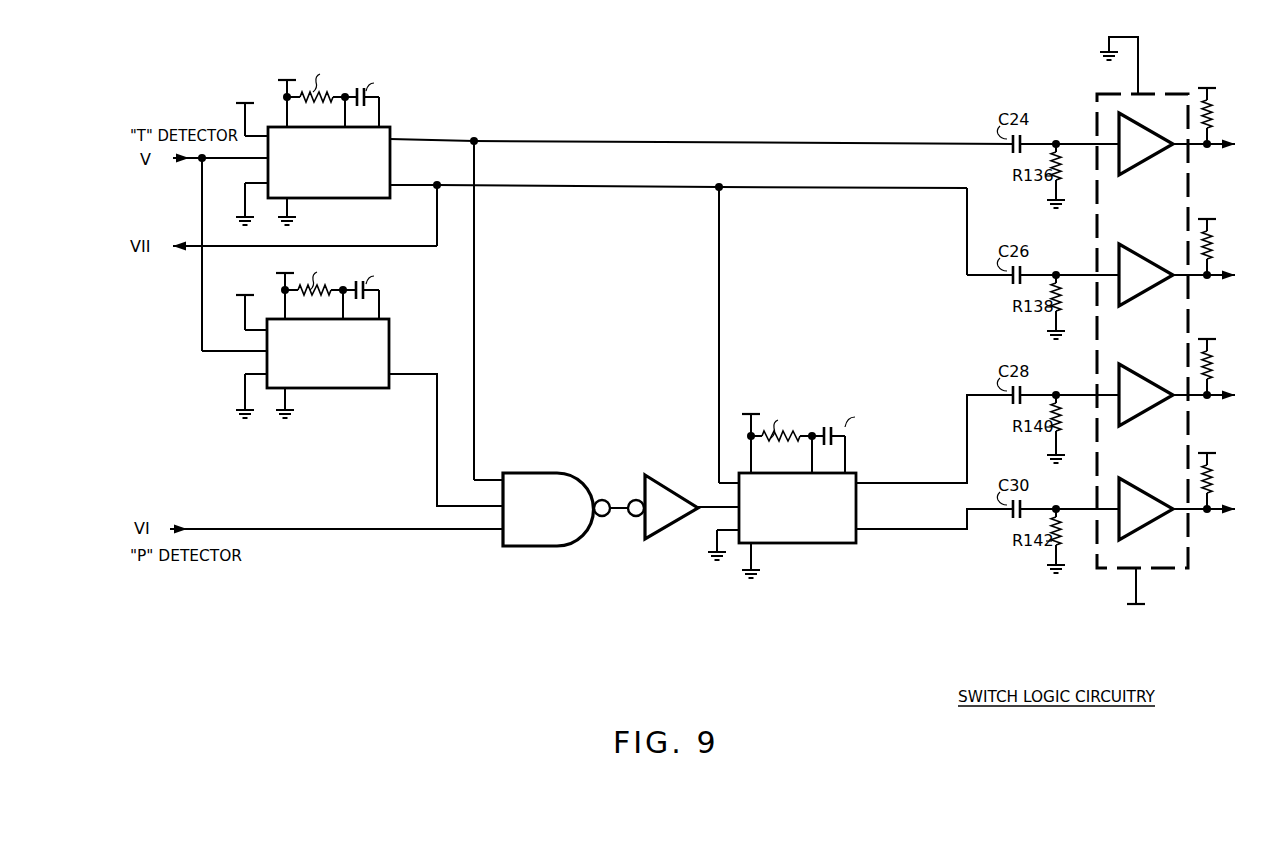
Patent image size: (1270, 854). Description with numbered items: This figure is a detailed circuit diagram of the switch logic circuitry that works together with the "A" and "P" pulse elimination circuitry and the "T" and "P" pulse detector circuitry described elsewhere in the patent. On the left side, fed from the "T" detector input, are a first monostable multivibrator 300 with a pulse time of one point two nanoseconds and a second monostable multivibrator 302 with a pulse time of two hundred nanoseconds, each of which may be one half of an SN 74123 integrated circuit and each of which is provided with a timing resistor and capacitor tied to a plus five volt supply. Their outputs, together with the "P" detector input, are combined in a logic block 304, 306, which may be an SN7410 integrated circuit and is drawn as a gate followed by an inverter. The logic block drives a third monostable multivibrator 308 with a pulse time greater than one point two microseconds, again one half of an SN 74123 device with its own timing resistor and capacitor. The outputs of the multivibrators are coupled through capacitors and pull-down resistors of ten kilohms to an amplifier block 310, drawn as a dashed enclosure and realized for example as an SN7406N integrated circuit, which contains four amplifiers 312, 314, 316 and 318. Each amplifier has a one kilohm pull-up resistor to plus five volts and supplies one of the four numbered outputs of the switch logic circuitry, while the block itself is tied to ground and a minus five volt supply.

The first monostable multivibrator 300 is at (380, 160).
The second monostable multivibrator 302 is at (380, 352).
The logic block 304 is at (508, 472).
The logic block 306 is at (658, 491).
The third monostable multivibrator 308 is at (846, 510).
The amplifier block 310 is at (1178, 557).
The amplifier 312 is at (1137, 133).
The amplifier 314 is at (1130, 265).
The amplifier 316 is at (1128, 379).
The amplifier 318 is at (1127, 492).